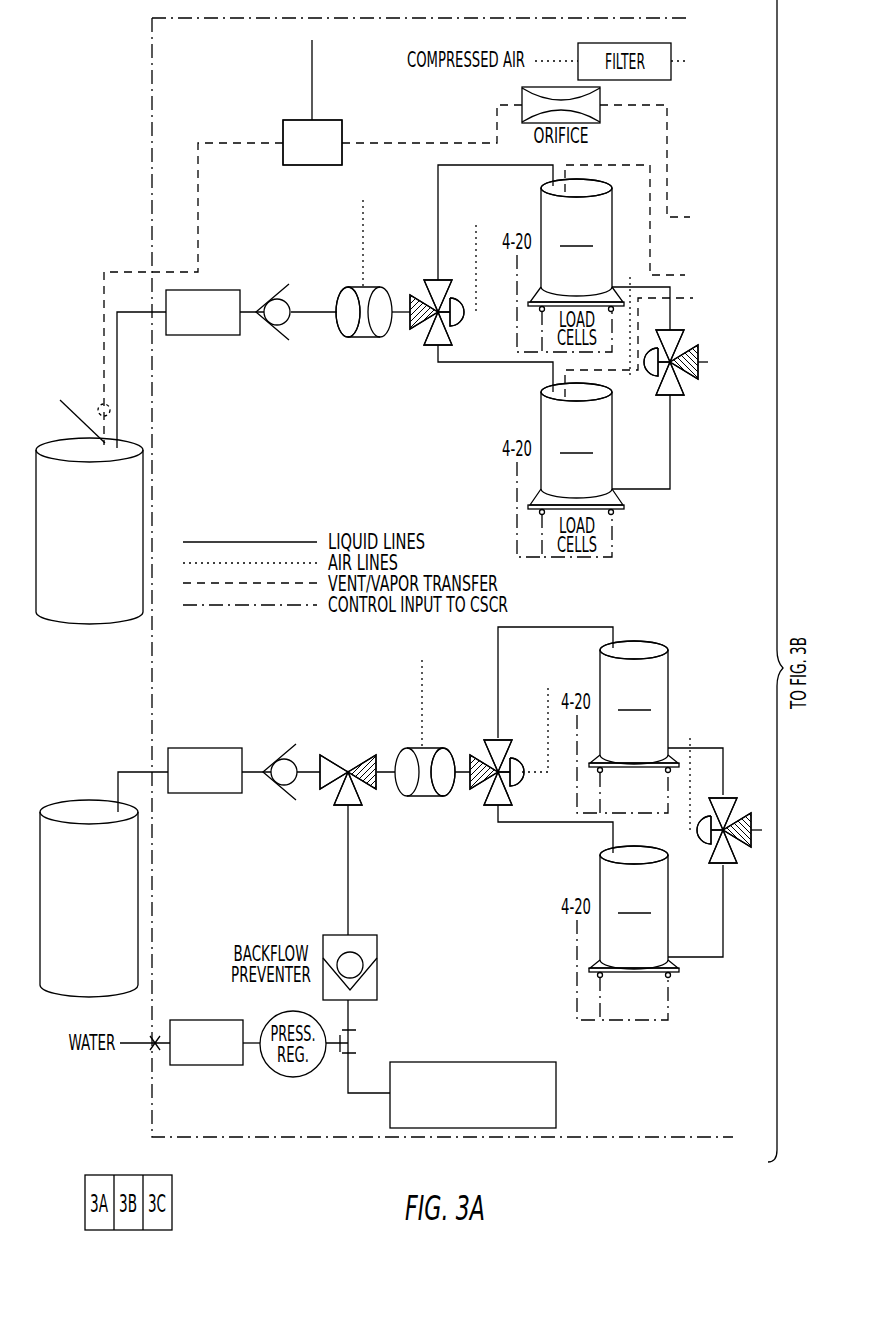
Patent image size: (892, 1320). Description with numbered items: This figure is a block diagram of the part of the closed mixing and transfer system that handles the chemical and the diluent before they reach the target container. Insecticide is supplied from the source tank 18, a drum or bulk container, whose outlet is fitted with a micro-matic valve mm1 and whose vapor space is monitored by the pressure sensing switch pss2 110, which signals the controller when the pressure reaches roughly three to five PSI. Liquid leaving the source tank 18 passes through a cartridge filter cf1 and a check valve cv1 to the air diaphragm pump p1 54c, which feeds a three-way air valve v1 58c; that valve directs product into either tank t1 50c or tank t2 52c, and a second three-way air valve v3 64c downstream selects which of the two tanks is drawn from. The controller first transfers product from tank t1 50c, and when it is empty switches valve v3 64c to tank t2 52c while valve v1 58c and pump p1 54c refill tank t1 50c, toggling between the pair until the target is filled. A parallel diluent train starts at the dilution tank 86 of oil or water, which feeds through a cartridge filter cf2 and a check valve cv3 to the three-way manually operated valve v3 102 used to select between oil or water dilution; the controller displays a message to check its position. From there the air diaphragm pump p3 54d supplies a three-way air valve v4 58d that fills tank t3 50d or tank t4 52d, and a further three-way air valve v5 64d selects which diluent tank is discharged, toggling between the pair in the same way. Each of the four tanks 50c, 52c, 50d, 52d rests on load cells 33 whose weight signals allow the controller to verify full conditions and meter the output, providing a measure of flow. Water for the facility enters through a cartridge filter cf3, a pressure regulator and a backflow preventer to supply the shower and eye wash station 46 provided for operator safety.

The source tank 18 is at (75, 622).
The dilution tank 86 is at (63, 960).
The pressure sensing switch 110 is at (338, 128).
The pressure sensing switch pss2 is at (314, 147).
The micro-matic valve mm1 is at (63, 387).
The cartridge filter cf1 is at (203, 327).
The cartridge filter cf2 is at (205, 788).
The cartridge filter cf3 is at (206, 1058).
The check valve cv1 is at (273, 324).
The check valve cv3 is at (280, 786).
The pump p1 is at (366, 361).
The pump p3 is at (426, 826).
The pump 54c is at (348, 325).
The pump 54d is at (428, 750).
The valve v1 is at (439, 349).
The valve 58c is at (448, 280).
The three-way manually operated valve v3 is at (520, 571).
The valve 64c is at (656, 390).
The valve v4 is at (507, 823).
The valve 58d is at (500, 738).
The valve v5 is at (730, 797).
The valve 64d is at (734, 848).
The three-way manually operated valve 102 is at (320, 755).
The tank 50c is at (576, 245).
The tank 52c is at (576, 449).
The tank 50d is at (634, 707).
The tank 52d is at (634, 912).
The tank t1 is at (576, 225).
The tank t2 is at (576, 431).
The tank t3 is at (634, 687).
The tank t4 is at (634, 892).
The load cells 33 is at (662, 787).
The shower and eye wash station 46 is at (530, 1085).